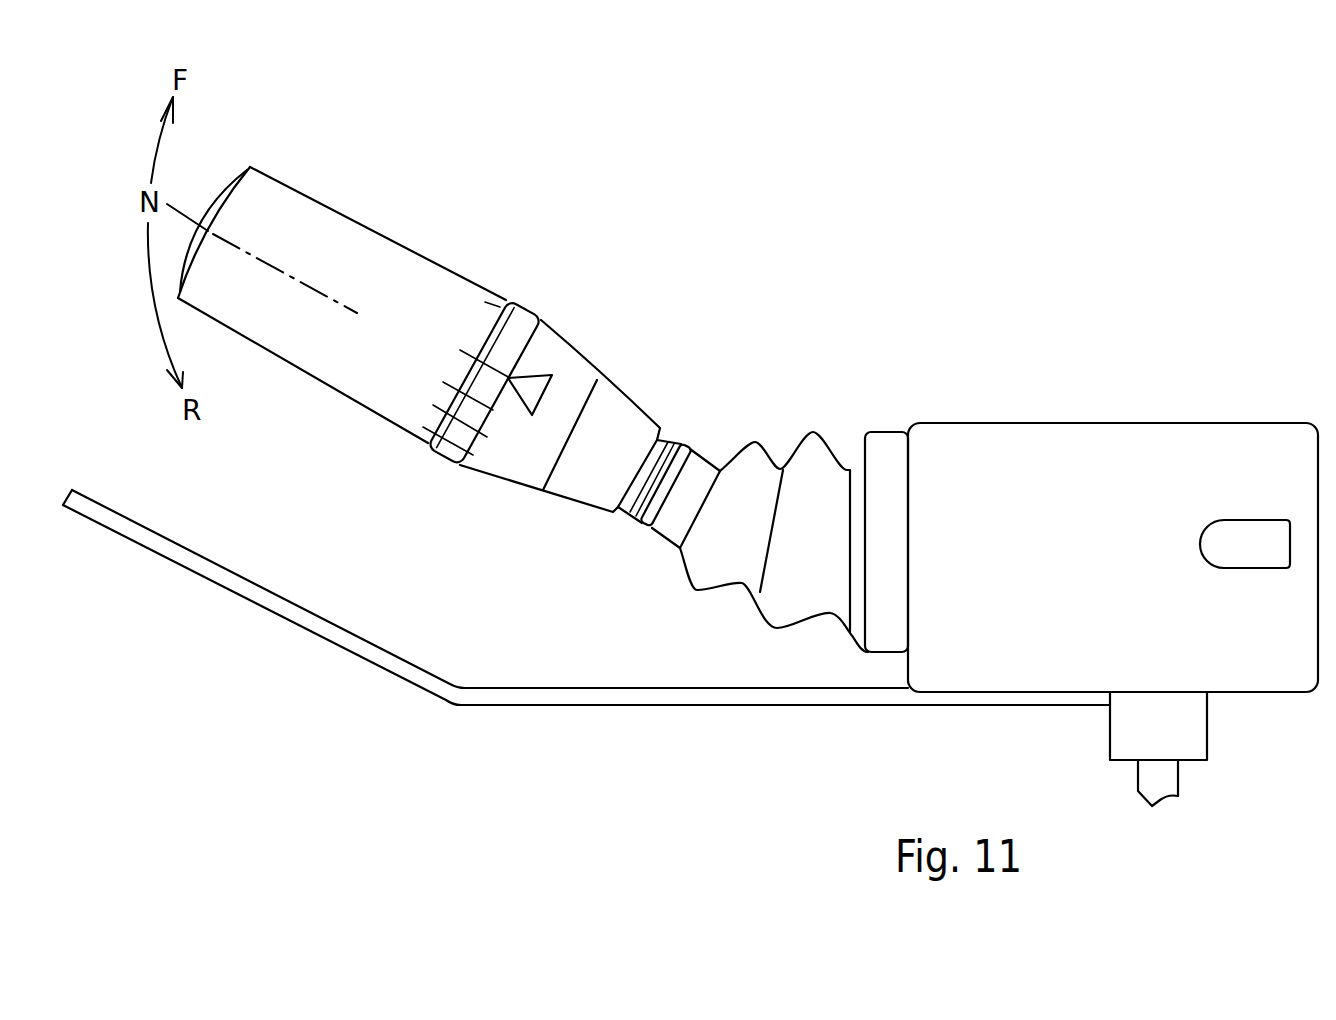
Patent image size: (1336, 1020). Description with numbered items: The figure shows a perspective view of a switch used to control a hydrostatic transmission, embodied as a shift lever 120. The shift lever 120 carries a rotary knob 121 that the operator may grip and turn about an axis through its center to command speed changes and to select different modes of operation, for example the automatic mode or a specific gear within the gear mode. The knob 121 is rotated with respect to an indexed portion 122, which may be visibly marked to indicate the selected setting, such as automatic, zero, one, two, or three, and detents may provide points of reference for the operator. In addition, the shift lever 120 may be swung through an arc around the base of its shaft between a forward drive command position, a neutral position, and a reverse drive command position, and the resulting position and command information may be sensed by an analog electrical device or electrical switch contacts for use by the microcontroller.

The shift lever 120 is at (645, 211).
The rotary knob 121 is at (317, 210).
The indexed portion 122 is at (563, 360).